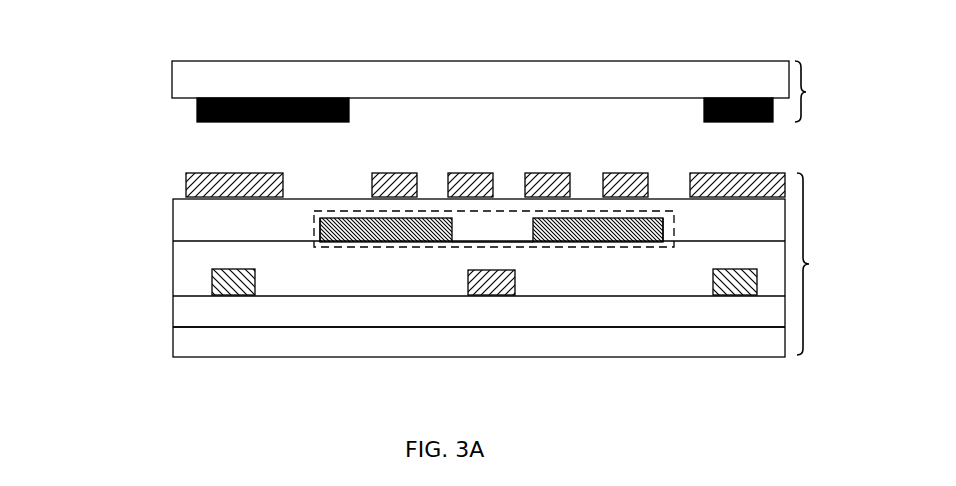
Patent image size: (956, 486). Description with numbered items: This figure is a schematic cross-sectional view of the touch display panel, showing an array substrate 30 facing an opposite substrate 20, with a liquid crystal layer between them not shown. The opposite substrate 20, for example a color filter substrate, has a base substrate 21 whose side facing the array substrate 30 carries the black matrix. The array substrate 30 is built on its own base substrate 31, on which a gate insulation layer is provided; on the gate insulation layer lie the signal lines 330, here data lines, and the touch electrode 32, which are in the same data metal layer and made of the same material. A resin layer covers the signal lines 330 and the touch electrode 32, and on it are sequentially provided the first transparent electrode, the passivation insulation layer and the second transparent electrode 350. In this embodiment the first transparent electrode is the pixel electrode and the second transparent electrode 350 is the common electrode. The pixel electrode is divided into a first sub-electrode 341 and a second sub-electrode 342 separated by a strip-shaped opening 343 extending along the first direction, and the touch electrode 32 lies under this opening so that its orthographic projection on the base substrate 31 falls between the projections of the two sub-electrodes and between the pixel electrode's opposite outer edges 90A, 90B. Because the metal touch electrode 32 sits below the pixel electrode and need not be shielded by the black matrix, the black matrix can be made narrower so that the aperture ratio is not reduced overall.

The opposite substrate 20 is at (520, 91).
The base substrate 21 is at (180, 80).
The array substrate 30 is at (511, 265).
The base substrate 31 is at (190, 349).
The touch electrode 32 is at (494, 296).
The signal lines 330 is at (212, 285).
The first sub-electrode 341 is at (437, 217).
The second sub-electrode 342 is at (567, 232).
The strip-shaped opening 343 is at (502, 232).
The second transparent electrode 350 is at (170, 187).
The outer edge 90A is at (314, 243).
The outer edge 90B is at (663, 243).